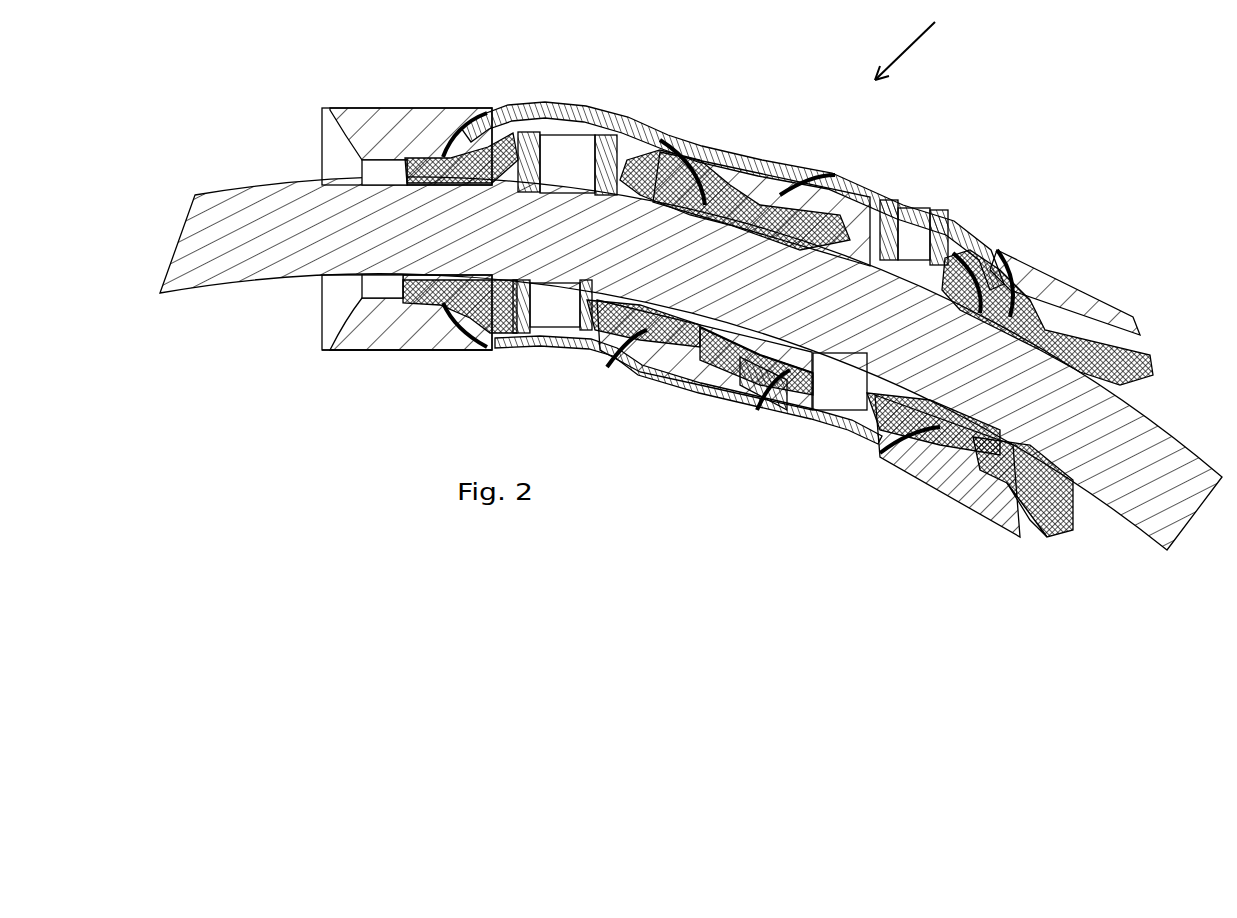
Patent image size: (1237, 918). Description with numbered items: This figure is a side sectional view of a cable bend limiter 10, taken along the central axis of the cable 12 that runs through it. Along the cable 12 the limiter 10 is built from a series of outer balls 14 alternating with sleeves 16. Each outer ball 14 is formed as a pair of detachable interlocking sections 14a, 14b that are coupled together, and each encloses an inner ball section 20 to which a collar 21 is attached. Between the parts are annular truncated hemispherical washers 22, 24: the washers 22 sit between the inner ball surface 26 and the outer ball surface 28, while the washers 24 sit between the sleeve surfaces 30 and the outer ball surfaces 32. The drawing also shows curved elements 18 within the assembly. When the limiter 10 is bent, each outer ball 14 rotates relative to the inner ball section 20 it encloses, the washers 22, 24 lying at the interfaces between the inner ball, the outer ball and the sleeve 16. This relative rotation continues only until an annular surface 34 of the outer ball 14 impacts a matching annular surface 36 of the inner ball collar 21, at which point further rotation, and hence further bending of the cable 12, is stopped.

The cable bend limiter 10 is at (926, 40).
The cable 12 is at (1190, 497).
The outer ball 14 is at (555, 100).
The interlocking section 14a is at (880, 190).
The interlocking section 14b is at (967, 218).
The sleeve 16 is at (405, 125).
The spring 18 is at (492, 110).
The inner ball section 20 is at (425, 350).
The collar 21 is at (363, 350).
The annular truncated hemispherical washer 22 is at (1020, 282).
The annular truncated hemispherical washer 24 is at (840, 175).
The inner ball surface 26 is at (550, 345).
The outer ball surface 28 is at (590, 350).
The sleeve surface 30 is at (730, 395).
The outer ball surface 32 is at (780, 412).
The annular surface 34 is at (855, 452).
The annular surface 36 is at (950, 482).